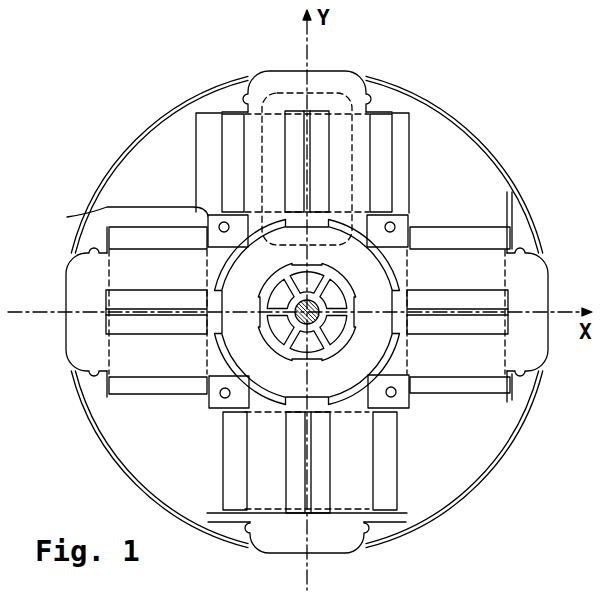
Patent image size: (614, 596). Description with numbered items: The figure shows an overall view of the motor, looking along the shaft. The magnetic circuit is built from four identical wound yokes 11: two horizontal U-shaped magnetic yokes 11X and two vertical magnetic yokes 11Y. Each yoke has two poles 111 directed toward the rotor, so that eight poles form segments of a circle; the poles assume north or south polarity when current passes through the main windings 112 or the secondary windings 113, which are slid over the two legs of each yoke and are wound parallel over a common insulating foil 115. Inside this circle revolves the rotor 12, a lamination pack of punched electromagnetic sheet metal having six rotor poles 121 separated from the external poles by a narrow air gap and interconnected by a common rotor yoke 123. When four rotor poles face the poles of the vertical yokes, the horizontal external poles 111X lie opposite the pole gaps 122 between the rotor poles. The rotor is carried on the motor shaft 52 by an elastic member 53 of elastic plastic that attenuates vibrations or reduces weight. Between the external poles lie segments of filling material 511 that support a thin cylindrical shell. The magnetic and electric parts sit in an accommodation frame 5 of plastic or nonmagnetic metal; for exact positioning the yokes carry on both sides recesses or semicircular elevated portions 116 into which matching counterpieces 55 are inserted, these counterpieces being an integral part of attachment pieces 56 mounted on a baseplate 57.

The accommodation frame 5 is at (160, 104).
The yokes 11 is at (613, 68).
The horizontal U-shaped magnetic yokes 11X is at (85, 348).
The vertical magnetic yokes 11Y is at (273, 82).
The poles 111 is at (257, 210).
The horizontal external poles 111X is at (368, 340).
The main windings 112 is at (382, 148).
The secondary windings 113 is at (383, 126).
The insulating foil 115 is at (600, 558).
The recesses or semicircular elevated portions 116 is at (258, 407).
The rotor 12 is at (390, 272).
The rotor poles 121 is at (438, 248).
The pole gaps 122 is at (420, 289).
The rotor yoke 123 is at (457, 377).
The motor shaft 52 is at (352, 338).
The elastic member 53 is at (308, 333).
The counterpieces 55 is at (240, 403).
The attachment pieces 56 is at (124, 217).
The baseplate 57 is at (135, 190).
The segments of filling material 511 is at (302, 415).